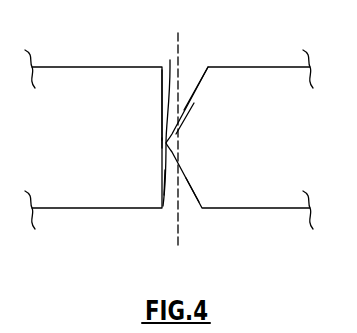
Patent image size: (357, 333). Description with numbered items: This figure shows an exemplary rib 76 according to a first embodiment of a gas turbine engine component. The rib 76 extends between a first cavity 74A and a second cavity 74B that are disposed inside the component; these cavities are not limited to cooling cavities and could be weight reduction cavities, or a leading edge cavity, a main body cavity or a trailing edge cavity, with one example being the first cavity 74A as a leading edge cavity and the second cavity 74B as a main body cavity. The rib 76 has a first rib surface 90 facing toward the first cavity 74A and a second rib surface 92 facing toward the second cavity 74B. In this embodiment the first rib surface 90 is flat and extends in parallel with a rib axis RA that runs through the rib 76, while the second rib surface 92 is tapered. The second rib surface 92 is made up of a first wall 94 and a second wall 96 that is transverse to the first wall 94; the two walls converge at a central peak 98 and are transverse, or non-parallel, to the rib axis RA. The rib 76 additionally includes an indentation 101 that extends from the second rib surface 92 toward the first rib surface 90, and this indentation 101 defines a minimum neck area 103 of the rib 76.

The first cavity 74A is at (88, 146).
The second cavity 74B is at (283, 148).
The rib 76 is at (188, 80).
The first rib surface 90 is at (160, 106).
The second rib surface 92 is at (194, 104).
The first wall 94 is at (184, 110).
The second wall 96 is at (193, 200).
The central peak 98 is at (170, 60).
The indentation 101 is at (166, 180).
The minimum neck area 103 is at (203, 143).
The rib axis RA is at (178, 247).